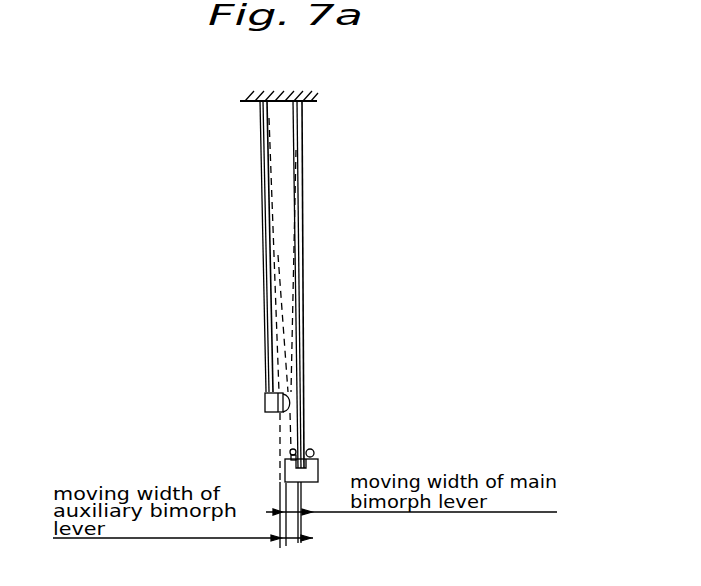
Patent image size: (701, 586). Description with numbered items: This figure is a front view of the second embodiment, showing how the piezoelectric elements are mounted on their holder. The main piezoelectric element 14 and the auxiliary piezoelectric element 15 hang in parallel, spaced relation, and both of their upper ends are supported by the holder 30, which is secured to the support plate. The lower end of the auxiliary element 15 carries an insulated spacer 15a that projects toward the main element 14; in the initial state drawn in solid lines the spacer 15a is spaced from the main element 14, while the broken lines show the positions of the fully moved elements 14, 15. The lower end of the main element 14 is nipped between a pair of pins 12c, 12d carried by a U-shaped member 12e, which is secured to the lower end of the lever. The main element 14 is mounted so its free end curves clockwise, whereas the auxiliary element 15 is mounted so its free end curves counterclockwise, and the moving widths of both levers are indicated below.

The holder 30 is at (312, 96).
The auxiliary piezoelectric element 15 is at (268, 327).
The main piezoelectric element 14 is at (305, 361).
The insulated spacer 15a is at (265, 403).
The pin 12c is at (290, 452).
The pin 12d is at (315, 450).
The U-shaped member 12e is at (318, 465).